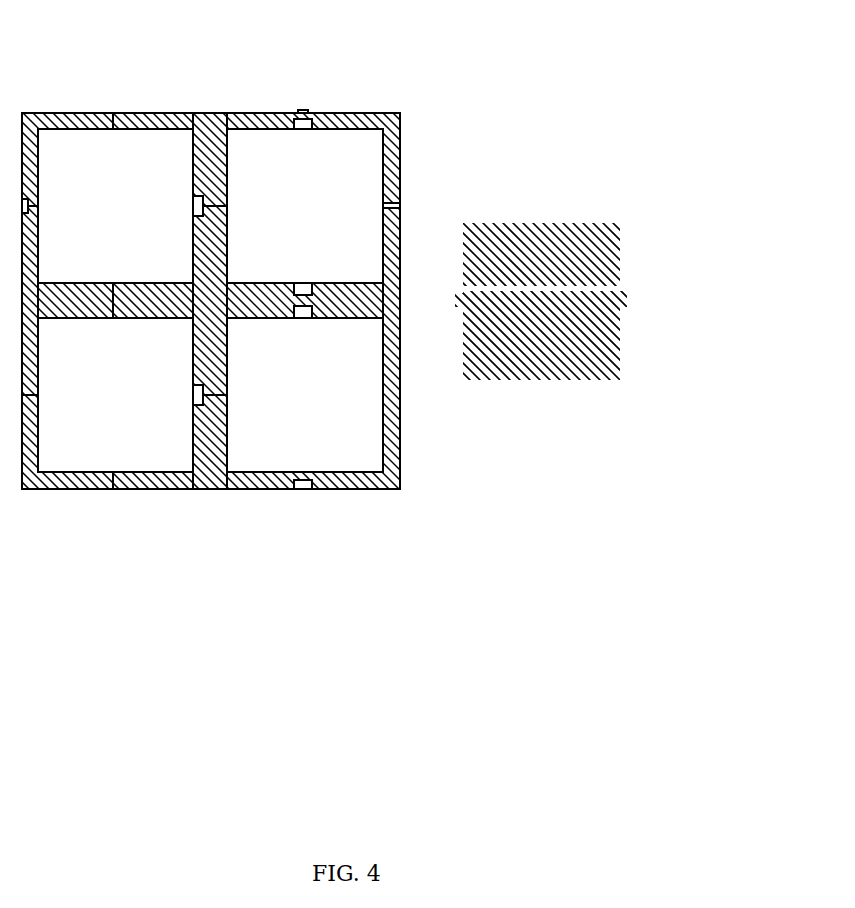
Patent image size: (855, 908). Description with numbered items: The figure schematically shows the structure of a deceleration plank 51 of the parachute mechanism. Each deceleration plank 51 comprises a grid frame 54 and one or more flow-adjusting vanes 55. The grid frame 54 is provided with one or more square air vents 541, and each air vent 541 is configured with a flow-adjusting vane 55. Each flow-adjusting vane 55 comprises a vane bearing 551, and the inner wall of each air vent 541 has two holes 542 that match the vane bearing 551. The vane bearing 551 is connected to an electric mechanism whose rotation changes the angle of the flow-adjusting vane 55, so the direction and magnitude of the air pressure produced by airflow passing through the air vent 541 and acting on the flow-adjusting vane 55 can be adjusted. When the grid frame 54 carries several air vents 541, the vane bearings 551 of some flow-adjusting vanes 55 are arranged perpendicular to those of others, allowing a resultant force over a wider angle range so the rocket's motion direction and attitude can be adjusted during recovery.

The deceleration plank 51 is at (584, 186).
The grid frame 54 is at (427, 309).
The air vent 541 is at (410, 205).
The hole 542 is at (313, 487).
The flow-adjusting vane 55 is at (427, 300).
The vane bearing 551 is at (576, 303).